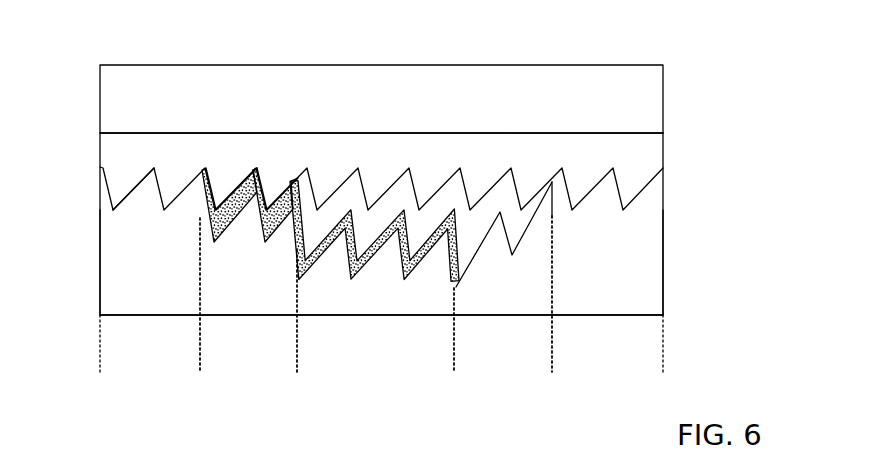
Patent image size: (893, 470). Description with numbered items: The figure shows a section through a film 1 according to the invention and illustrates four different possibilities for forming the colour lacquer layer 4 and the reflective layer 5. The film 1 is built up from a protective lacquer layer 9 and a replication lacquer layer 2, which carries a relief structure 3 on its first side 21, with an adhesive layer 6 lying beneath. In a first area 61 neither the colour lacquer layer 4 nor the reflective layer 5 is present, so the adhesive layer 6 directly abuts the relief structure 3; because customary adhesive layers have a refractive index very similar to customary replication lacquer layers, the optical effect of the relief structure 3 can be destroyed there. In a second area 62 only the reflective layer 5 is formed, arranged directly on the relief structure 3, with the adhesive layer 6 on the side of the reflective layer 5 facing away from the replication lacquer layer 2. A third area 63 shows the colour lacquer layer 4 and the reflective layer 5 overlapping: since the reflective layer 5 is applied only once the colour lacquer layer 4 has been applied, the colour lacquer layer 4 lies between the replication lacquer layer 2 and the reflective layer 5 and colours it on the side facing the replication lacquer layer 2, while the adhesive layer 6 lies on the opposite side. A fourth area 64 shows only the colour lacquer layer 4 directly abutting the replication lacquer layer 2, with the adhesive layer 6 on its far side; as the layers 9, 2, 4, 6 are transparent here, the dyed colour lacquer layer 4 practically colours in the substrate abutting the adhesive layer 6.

The film 1 is at (623, 57).
The protective lacquer layer 9 is at (665, 88).
The replication lacquer layer 2 is at (665, 155).
The relief structure 3 is at (663, 170).
The first side of the replication lacquer layer 21 is at (134, 194).
The reflective layer 5 is at (200, 219).
The colour lacquer layer 4 is at (540, 211).
The adhesive layer 6 is at (657, 291).
The first area 61 is at (381, 305).
The second area 62 is at (248, 306).
The third area 63 is at (375, 322).
The fourth area 64 is at (503, 305).